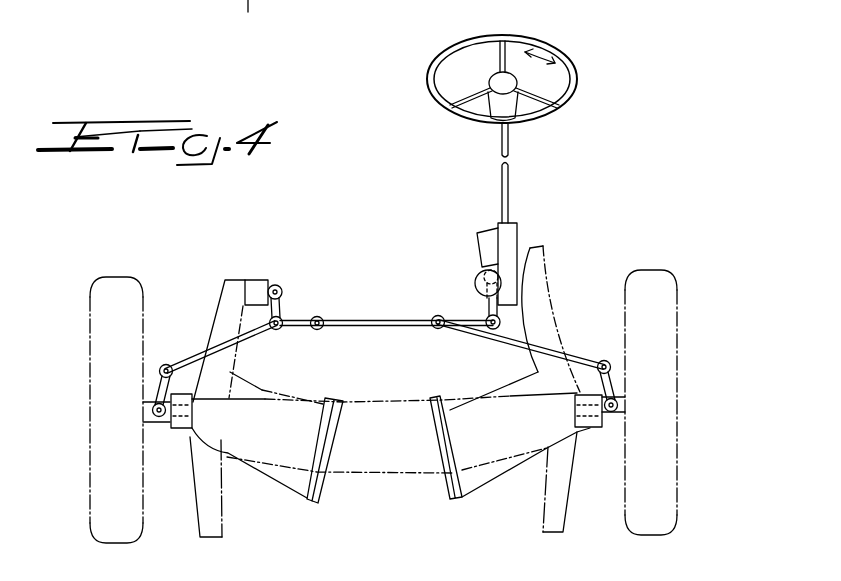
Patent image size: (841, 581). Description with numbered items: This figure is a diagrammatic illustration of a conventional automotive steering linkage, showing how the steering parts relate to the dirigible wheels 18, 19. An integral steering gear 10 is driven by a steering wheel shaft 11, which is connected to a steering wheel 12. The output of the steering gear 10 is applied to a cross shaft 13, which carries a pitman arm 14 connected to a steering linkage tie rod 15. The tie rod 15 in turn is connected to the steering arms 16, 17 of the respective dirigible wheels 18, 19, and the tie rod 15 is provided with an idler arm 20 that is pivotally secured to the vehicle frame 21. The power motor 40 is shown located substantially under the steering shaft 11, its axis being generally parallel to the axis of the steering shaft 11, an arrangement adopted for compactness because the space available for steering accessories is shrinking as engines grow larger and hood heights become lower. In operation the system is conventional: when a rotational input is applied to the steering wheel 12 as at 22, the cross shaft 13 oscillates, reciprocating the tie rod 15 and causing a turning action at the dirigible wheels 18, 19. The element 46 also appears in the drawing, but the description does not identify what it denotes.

The ball joint 10 is at (464, 281).
The steering column shaft 11 is at (510, 181).
The steering wheel 12 is at (458, 118).
The socket 13 is at (480, 272).
The pivot arm 14 is at (489, 305).
The tie rod 15 is at (368, 318).
The left steering rod 16 is at (266, 347).
The right steering rod 17 is at (495, 337).
The left wheel 18 is at (90, 383).
The right wheel 19 is at (678, 365).
The pivot link 20 is at (283, 302).
The bracket 21 is at (243, 278).
The rotation arrow 22 is at (546, 55).
The gear housing 40 is at (483, 232).
The frame member 46 is at (234, 18).